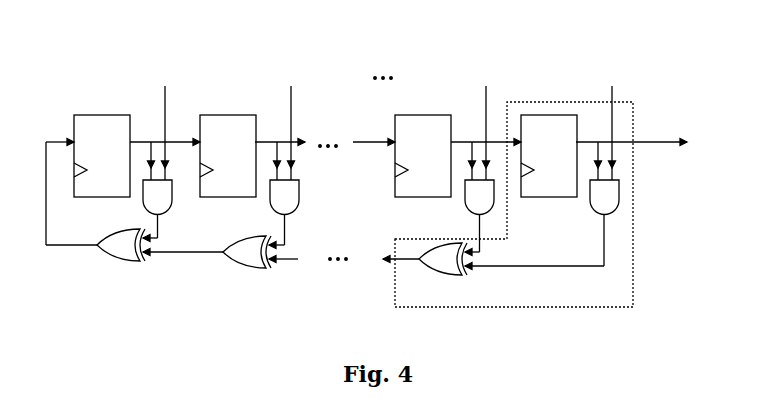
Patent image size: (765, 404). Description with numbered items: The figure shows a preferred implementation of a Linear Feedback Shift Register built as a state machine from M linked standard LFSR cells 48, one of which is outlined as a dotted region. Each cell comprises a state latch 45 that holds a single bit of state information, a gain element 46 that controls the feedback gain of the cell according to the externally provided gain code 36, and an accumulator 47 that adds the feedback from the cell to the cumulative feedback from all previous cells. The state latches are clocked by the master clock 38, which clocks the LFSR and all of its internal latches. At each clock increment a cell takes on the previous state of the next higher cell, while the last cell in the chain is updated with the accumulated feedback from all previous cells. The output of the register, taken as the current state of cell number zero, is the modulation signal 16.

The gain code 36 is at (366, 182).
The master clock 38 is at (294, 170).
The state latch 45 is at (562, 154).
The gain element 46 is at (542, 225).
The accumulator 47 is at (425, 267).
The standard LFSR cell 48 is at (514, 217).
The modulation signal 16 is at (631, 132).